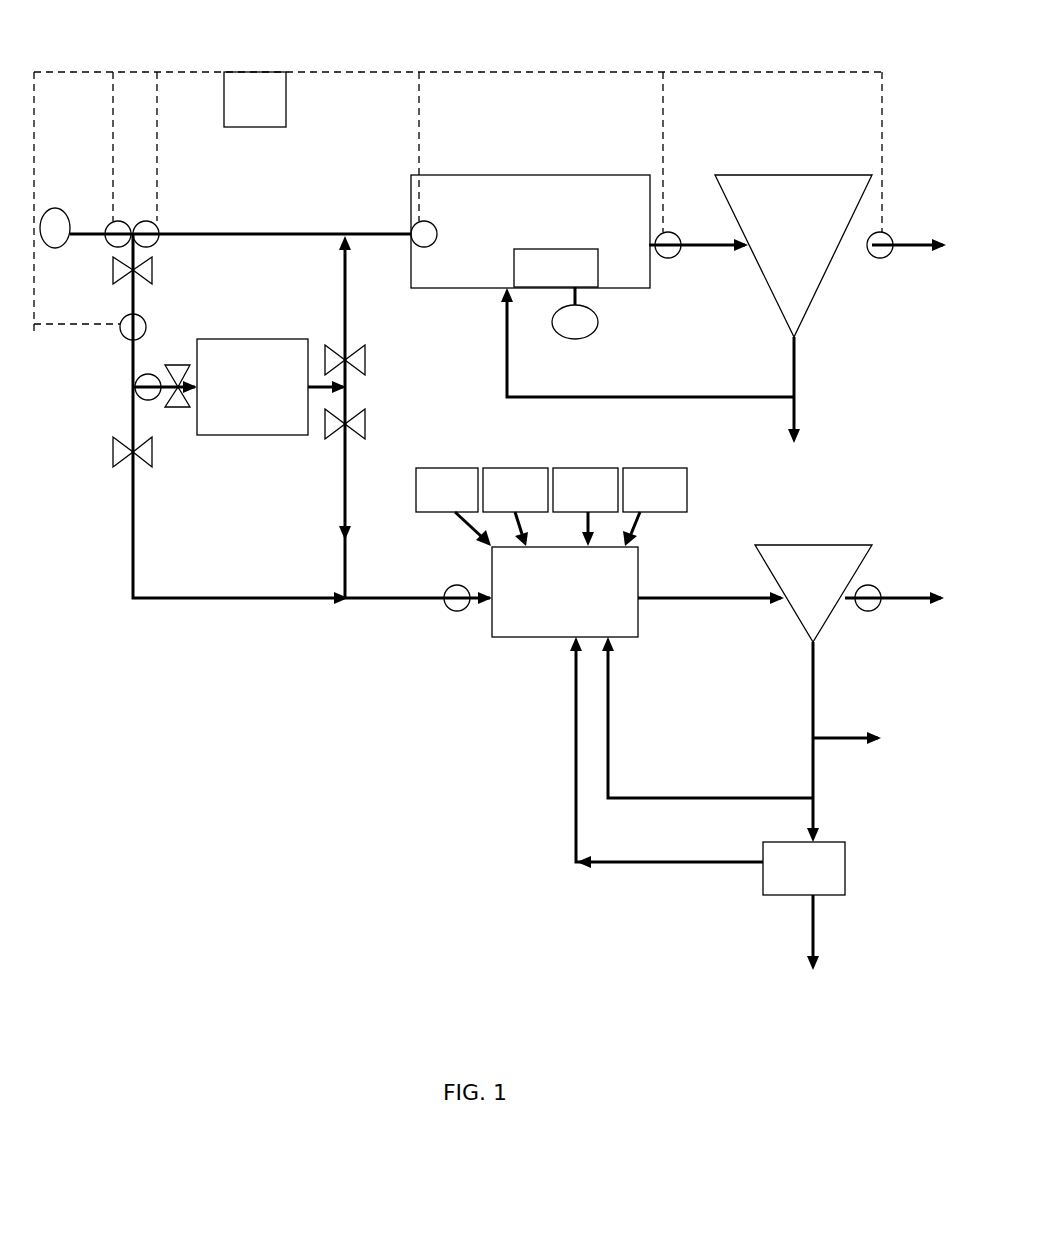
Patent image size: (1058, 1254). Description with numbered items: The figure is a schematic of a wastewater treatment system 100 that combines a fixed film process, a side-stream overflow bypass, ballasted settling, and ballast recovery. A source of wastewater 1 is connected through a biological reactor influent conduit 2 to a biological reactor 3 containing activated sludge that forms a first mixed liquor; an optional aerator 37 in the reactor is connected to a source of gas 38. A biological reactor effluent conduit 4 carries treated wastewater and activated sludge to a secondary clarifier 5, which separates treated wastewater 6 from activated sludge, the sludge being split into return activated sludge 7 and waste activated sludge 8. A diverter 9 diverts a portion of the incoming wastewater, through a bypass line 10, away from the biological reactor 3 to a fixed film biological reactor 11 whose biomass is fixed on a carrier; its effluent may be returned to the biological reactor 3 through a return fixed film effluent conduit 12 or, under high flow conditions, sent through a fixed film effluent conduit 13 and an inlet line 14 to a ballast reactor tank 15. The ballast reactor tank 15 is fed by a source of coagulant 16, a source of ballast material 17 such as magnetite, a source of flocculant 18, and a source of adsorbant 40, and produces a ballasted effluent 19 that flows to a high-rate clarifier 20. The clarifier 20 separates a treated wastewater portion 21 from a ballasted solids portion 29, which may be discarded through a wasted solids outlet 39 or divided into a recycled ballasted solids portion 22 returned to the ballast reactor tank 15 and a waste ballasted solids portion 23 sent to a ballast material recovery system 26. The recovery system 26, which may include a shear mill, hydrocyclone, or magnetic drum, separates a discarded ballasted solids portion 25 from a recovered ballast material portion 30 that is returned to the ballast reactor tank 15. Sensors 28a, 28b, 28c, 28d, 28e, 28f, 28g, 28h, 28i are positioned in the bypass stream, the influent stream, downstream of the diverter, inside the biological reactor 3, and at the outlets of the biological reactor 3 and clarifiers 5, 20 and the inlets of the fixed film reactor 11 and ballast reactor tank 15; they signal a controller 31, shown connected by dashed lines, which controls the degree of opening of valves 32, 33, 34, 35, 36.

The source of wastewater 1 is at (56, 207).
The biological reactor influent conduit 2 is at (326, 234).
The biological reactor 3 is at (530, 231).
The biological reactor effluent conduit 4 is at (690, 245).
The secondary clarifier 5 is at (793, 256).
The treated wastewater 6 is at (933, 245).
The return activated sludge 7 is at (648, 390).
The waste activated sludge 8 is at (794, 402).
The diverter 9 is at (128, 285).
The bypass line 10 is at (133, 517).
The fixed film biological reactor 11 is at (271, 387).
The return fixed film effluent conduit 12 is at (345, 325).
The fixed film effluent conduit 13 is at (345, 479).
The inlet line 14 is at (383, 585).
The ballast reactor tank 15 is at (565, 592).
The source of coagulant 16 is at (453, 507).
The source of ballast material 17 is at (515, 507).
The source of flocculant 18 is at (585, 507).
The ballasted effluent 19 is at (720, 598).
The clarifier 20 is at (813, 593).
The treated wastewater portion 21 is at (913, 598).
The recycled ballasted solids portion 22 is at (700, 797).
The waste ballasted solids portion 23 is at (815, 816).
The discarded ballasted solids portion 25 is at (813, 937).
The ballast material recovery system 26 is at (804, 868).
The sensor 28a is at (120, 335).
The sensor 28b is at (106, 219).
The sensor 28c is at (145, 220).
The sensor 28d is at (437, 234).
The sensor 28e is at (680, 258).
The sensor 28f is at (885, 260).
The sensor 28g is at (882, 604).
The sensor 28h is at (128, 390).
The sensor 28i is at (457, 612).
The ballasted solids portion 29 is at (813, 653).
The recovered ballast material portion 30 is at (573, 786).
The controller 31 is at (458, 202).
The valve 32 is at (154, 270).
The valve 33 is at (183, 348).
The valve 34 is at (160, 455).
The valve 35 is at (366, 364).
The valve 36 is at (366, 424).
The aerator 37 is at (556, 268).
The source of gas 38 is at (575, 313).
The wasted solids outlet 39 is at (847, 735).
The source of adsorbant 40 is at (655, 507).
The treatment system 100 is at (308, 740).